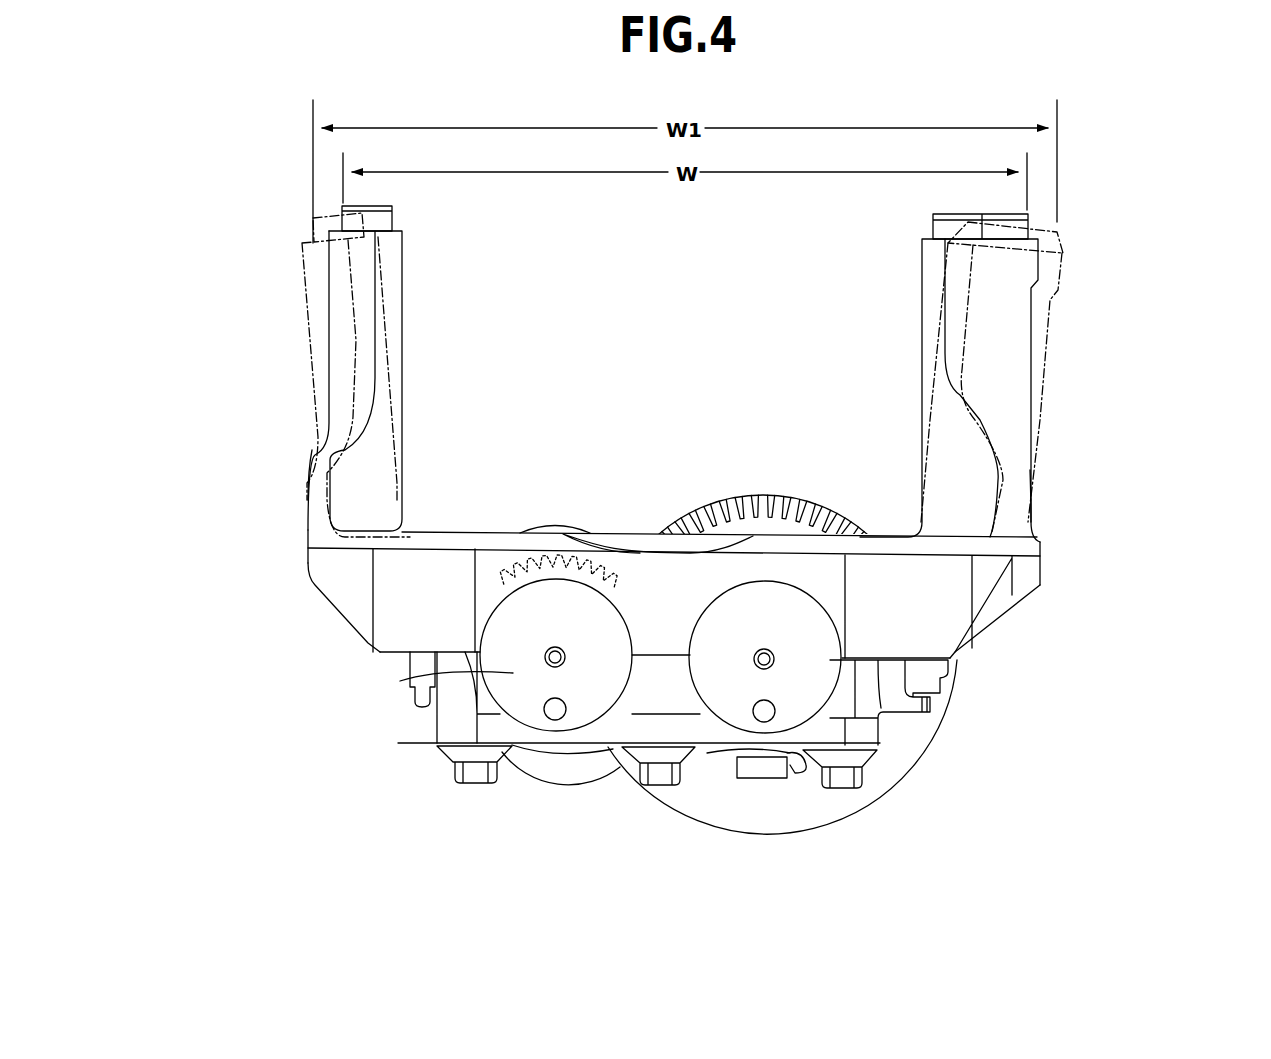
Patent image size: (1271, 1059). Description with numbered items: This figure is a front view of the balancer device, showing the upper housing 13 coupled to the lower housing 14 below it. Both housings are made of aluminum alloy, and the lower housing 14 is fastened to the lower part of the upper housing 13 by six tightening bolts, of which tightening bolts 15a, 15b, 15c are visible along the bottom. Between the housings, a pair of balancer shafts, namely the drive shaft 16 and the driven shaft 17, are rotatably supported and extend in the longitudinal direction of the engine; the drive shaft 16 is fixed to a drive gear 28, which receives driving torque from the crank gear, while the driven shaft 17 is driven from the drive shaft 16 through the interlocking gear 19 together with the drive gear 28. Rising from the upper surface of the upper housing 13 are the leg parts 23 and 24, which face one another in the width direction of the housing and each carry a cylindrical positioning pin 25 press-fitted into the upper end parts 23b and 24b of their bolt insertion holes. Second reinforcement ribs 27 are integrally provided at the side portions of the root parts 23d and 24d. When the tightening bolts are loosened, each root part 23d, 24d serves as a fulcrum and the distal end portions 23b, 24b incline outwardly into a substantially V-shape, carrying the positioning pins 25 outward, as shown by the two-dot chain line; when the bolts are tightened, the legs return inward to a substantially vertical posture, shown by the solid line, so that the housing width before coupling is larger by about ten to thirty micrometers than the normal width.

The upper housing 13 is at (942, 605).
The lower housing 14 is at (863, 727).
The tightening bolt 15a is at (843, 788).
The tightening bolt 15b is at (660, 787).
The tightening bolt 15c is at (477, 785).
The drive shaft 16 is at (815, 678).
The driven shaft 17 is at (510, 668).
The interlocking gear 19 is at (556, 555).
The leg part 23 is at (928, 315).
The upper end part of bolt insertion hole 23b is at (1062, 270).
The root part 23d is at (973, 495).
The leg part 24 is at (403, 290).
The upper end part of bolt insertion hole 24b is at (303, 255).
The root part 24d is at (347, 500).
The positioning pin 25 is at (308, 233).
The second reinforcement rib 27 is at (987, 575).
The drive gear 28 is at (752, 522).